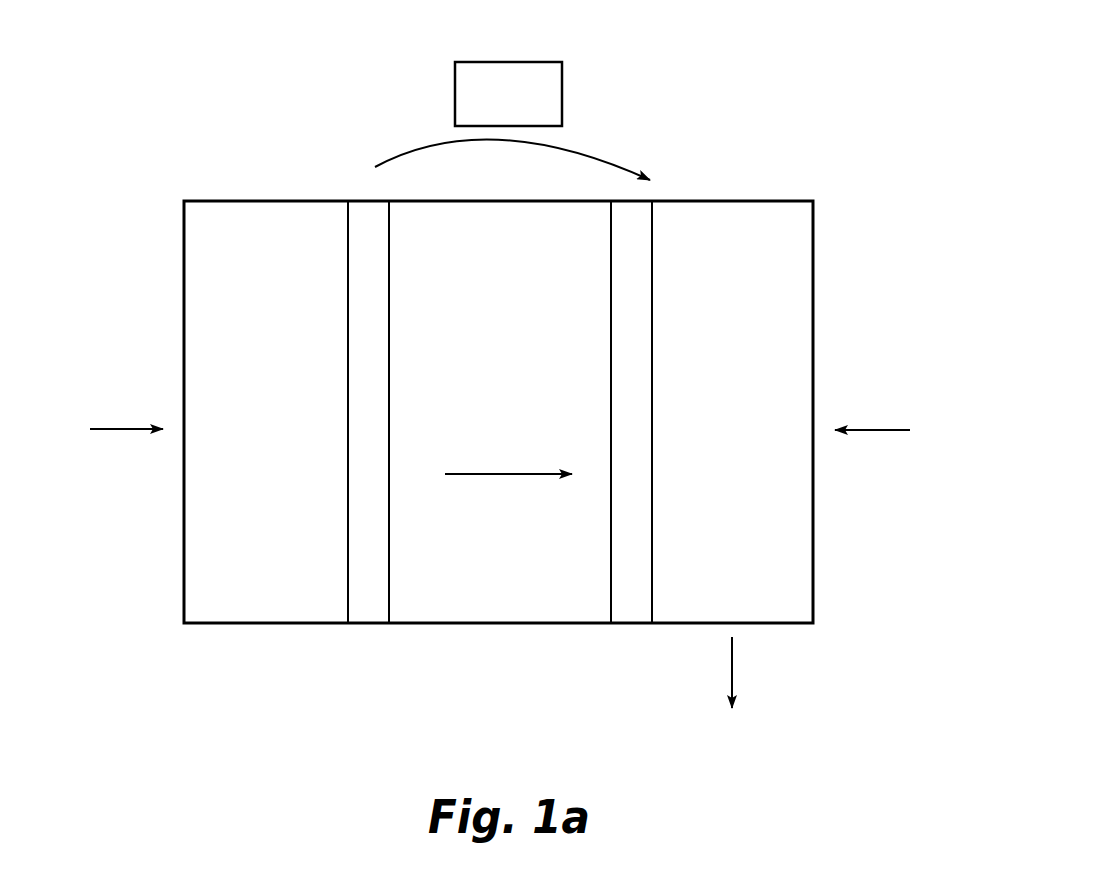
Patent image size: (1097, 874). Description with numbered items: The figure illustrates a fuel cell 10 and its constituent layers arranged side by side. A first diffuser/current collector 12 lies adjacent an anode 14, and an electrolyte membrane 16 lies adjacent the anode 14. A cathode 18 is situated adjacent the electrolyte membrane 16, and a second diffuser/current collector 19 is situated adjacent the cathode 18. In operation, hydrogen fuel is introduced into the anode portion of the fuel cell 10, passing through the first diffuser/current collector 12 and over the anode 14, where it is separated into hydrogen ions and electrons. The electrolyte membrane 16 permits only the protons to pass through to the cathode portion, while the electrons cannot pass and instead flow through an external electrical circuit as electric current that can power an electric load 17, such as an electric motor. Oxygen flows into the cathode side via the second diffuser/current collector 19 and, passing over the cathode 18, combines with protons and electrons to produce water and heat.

The fuel cell 10 is at (848, 100).
The first diffuser/current collector 12 is at (268, 606).
The anode 14 is at (365, 625).
The electrolyte membrane 16 is at (520, 606).
The electric load 17 is at (522, 62).
The cathode 18 is at (632, 625).
The second diffuser/current collector 19 is at (755, 606).